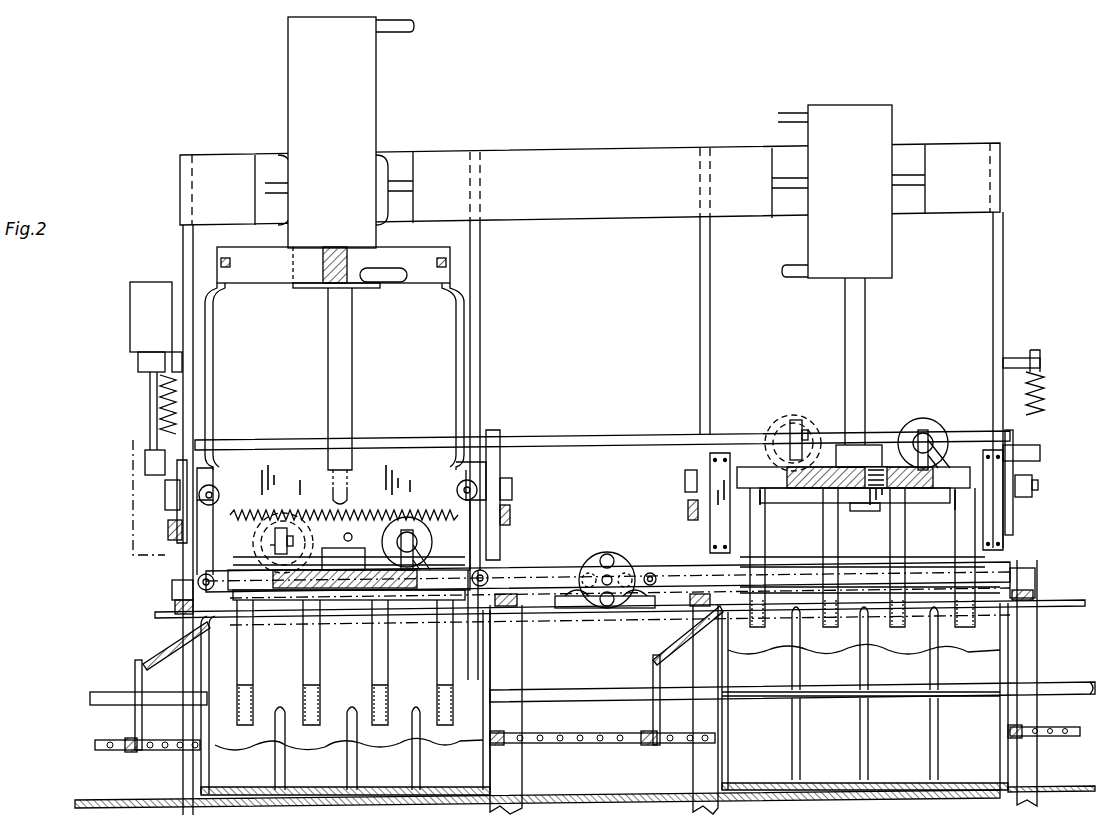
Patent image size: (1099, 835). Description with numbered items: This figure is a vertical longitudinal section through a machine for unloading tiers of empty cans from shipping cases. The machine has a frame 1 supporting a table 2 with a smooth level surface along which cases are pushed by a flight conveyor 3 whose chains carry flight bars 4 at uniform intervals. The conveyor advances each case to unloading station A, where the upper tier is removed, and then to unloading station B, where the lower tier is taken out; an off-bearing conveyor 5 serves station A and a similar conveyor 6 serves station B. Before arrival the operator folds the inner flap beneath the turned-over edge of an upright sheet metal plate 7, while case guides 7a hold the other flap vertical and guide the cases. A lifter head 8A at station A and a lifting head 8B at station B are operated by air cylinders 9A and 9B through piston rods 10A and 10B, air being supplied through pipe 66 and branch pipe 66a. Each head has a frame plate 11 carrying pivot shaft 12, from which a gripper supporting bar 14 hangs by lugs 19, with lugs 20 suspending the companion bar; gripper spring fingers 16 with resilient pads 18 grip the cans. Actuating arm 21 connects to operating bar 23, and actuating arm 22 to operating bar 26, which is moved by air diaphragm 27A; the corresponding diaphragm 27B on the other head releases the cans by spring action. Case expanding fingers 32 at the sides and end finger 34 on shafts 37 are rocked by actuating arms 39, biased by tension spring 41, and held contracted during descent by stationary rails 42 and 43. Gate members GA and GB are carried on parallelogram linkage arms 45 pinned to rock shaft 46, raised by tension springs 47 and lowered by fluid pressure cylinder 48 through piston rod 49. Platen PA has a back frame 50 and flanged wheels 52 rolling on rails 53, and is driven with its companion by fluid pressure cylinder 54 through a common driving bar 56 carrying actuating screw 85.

The frame 1 is at (35, 313).
The table 2 is at (602, 778).
The flight conveyor 3 is at (127, 170).
The flight bars 4 is at (130, 760).
The article off-bearing conveyor 5 is at (880, 590).
The article conveyor 6 is at (469, 600).
The upright sheet metal plate 7 is at (142, 724).
The case guides 7a is at (645, 678).
The lifter head 8A is at (962, 460).
The lifting head 8B is at (520, 546).
The air cylinder 9A is at (884, 247).
The air cylinder 9B is at (366, 100).
The piston rod 10A is at (853, 302).
The piston rod 10B is at (338, 357).
The frame plate 11 is at (835, 410).
The pivot shaft 12 is at (364, 590).
The gripper supporting bar 14 is at (279, 608).
The gripper spring fingers 16 is at (305, 670).
The resilient pads 18 is at (262, 728).
The lugs 19 is at (280, 608).
The lugs 20 is at (428, 598).
The actuating arm 21 is at (177, 531).
The actuating arm 22 is at (960, 380).
The operating bar 23 is at (280, 520).
The operating bar 26 is at (420, 528).
The air diaphragm or cylinder 27A is at (927, 417).
The air diaphragm 27B is at (418, 498).
The case expanding fingers 32 is at (322, 670).
The end expanding finger 34 is at (207, 666).
The actuating shafts 37 is at (200, 582).
The actuating arms 39 is at (218, 500).
The tension spring 41 is at (382, 517).
The parallel rails 42 is at (324, 402).
The stationary rails 43 is at (212, 398).
The parallelogram linkage arms 45 is at (175, 490).
The actuating rock shaft 46 is at (580, 434).
The tension springs 47 is at (156, 402).
The fluid pressure cylinder 48 is at (140, 330).
The piston rod 49 is at (154, 426).
The frame 50 is at (776, 606).
The flanged wheels 52 is at (172, 588).
The rails 53 is at (187, 612).
The fluid pressure cylinder 54 is at (614, 562).
The common driving bar 56 is at (558, 576).
The pipe 66 is at (408, 28).
The branch pipe 66a is at (792, 111).
The actuating screw 85 is at (650, 572).
The unloading station A is at (883, 385).
The unloading station B is at (373, 415).
The gate member GA is at (745, 455).
The gate member GB is at (272, 470).
The platen PA is at (996, 570).